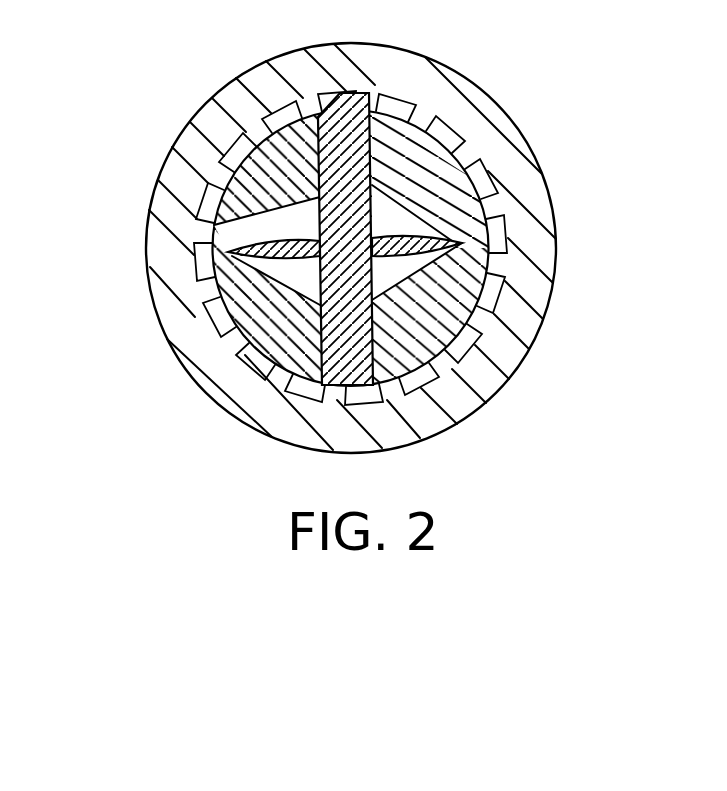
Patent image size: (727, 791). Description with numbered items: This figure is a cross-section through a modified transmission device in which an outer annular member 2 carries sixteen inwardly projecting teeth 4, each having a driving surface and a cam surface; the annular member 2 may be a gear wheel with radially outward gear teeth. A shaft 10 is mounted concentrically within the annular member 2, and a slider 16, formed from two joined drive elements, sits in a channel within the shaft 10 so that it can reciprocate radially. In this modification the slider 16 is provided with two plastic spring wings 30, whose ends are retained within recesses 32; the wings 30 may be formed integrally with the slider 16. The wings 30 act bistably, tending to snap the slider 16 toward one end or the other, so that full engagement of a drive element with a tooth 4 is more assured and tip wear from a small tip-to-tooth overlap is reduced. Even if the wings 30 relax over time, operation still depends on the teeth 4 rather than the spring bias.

The outer annular member 2 is at (528, 370).
The inwardly projecting teeth 4 is at (480, 173).
The shaft 10 is at (235, 303).
The slider 16 is at (357, 92).
The plastic spring wings 30 is at (287, 218).
The recesses 32 is at (207, 180).